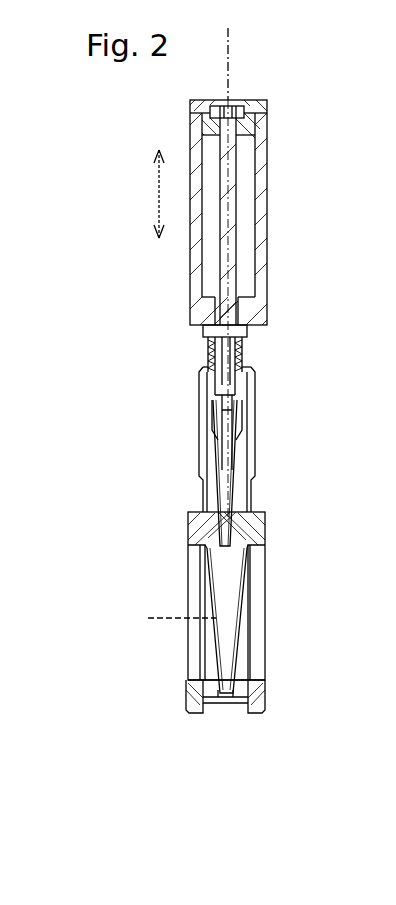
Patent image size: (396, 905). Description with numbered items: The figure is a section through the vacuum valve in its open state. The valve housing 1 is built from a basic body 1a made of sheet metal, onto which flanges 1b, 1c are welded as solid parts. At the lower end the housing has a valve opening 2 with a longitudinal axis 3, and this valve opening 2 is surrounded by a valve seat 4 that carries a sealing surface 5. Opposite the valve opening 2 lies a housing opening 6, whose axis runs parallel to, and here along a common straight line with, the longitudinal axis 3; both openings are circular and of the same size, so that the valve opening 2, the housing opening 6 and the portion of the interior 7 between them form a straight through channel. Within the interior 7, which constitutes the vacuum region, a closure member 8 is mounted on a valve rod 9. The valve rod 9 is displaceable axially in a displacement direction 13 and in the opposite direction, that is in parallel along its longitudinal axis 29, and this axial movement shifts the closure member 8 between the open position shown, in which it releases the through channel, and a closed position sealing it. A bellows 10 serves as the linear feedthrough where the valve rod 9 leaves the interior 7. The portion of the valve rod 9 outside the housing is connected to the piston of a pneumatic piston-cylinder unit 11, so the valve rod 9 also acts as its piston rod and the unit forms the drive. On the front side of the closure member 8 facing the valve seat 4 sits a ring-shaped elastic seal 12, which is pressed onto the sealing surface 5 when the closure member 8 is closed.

The valve housing 1 is at (185, 700).
The basic body 1a is at (255, 433).
The flange 1b is at (192, 702).
The flange 1c is at (259, 702).
The valve opening 2 is at (188, 661).
The longitudinal axis 3 is at (162, 617).
The valve seat 4 is at (236, 691).
The sealing surface 5 is at (208, 541).
The housing opening 6 is at (256, 636).
The interior 7 is at (247, 501).
The closure member 8 is at (227, 466).
The valve rod 9 is at (250, 345).
The bellows 10 is at (246, 366).
The pneumatic piston-cylinder unit 11 is at (273, 250).
The elastic seal 12 is at (208, 393).
The displacement direction 13 is at (158, 196).
The longitudinal axis 29 is at (232, 182).